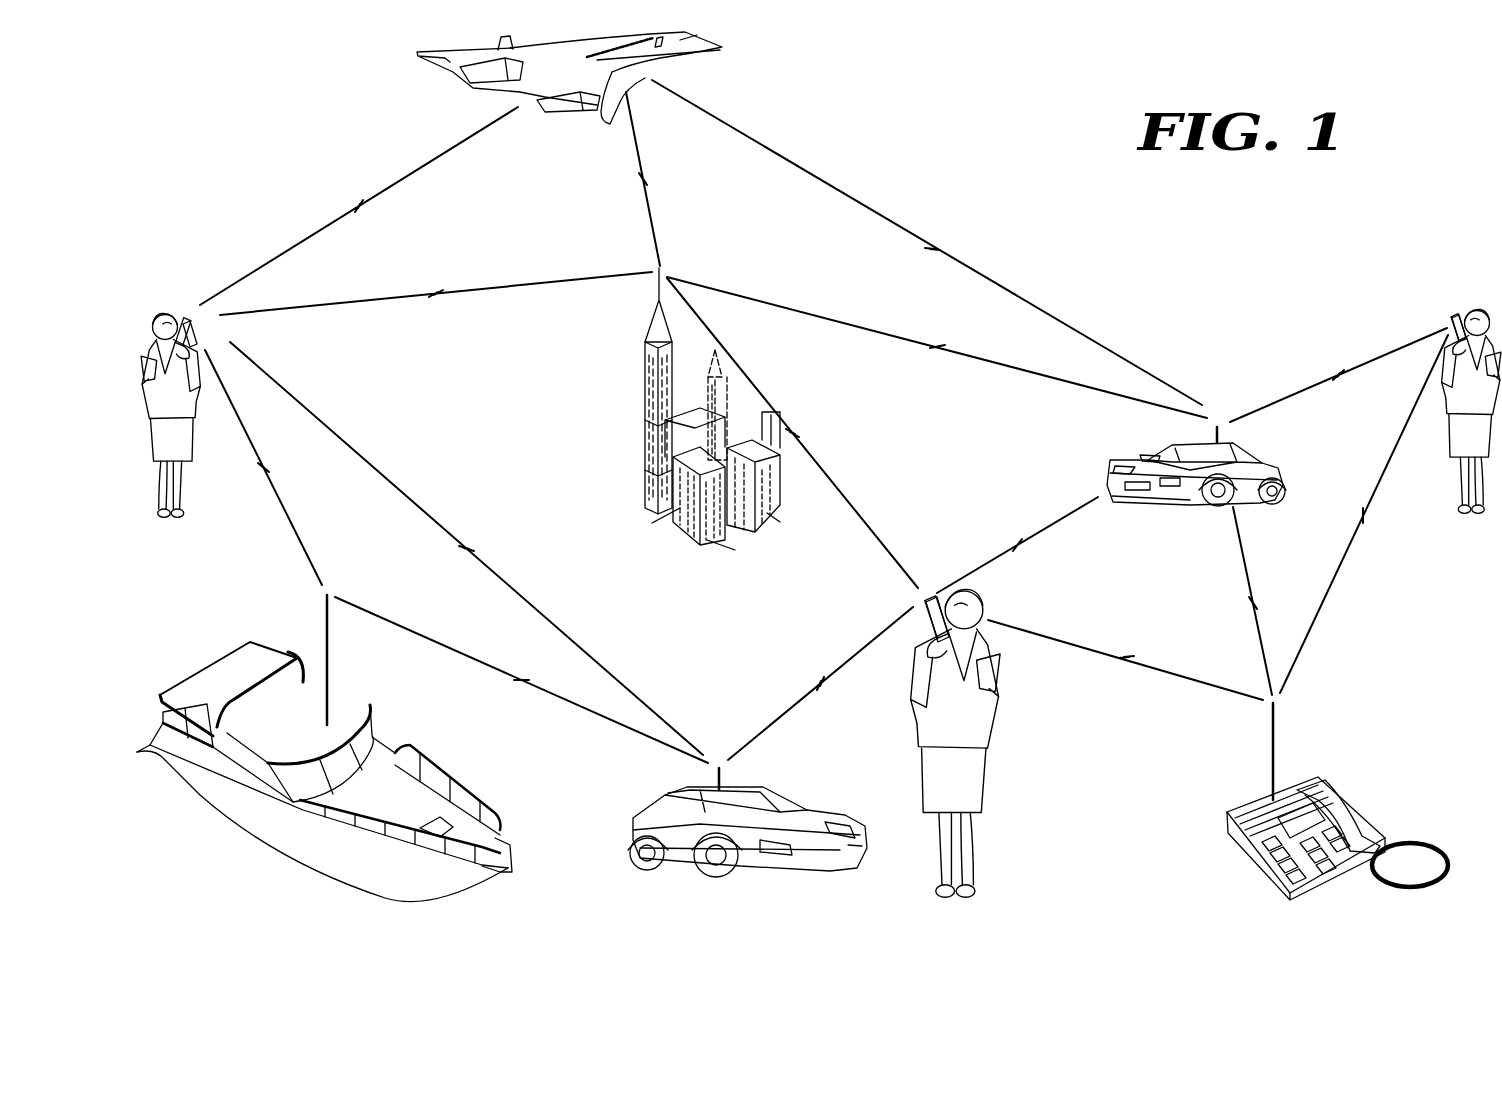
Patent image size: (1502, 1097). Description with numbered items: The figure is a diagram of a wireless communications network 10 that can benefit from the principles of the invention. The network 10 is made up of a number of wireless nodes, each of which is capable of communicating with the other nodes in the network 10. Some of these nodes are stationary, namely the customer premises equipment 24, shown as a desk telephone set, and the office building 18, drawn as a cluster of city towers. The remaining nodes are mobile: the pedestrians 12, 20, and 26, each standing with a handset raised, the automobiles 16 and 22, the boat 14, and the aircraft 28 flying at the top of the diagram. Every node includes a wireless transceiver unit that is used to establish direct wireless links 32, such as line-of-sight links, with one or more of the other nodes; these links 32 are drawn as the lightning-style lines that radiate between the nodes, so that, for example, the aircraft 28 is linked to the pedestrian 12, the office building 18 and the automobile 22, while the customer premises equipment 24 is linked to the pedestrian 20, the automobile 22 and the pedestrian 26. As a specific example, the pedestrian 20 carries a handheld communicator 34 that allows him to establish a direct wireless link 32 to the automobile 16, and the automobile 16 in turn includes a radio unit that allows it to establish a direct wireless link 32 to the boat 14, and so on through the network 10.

The wireless communications network 10 is at (1078, 137).
The pedestrian 12 is at (186, 490).
The boat 14 is at (440, 754).
The automobile 16 is at (640, 812).
The office building 18 is at (644, 399).
The pedestrian 20 is at (990, 733).
The automobile 22 is at (1284, 468).
The customer premises equipment 24 is at (1245, 805).
The pedestrian 26 is at (1456, 497).
The aircraft 28 is at (565, 112).
The direct wireless link 32 is at (434, 152).
The handheld communicator 34 is at (186, 320).